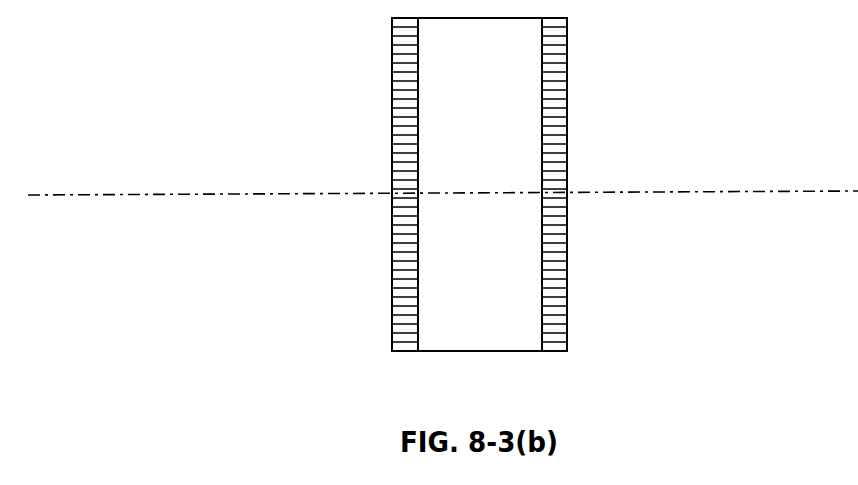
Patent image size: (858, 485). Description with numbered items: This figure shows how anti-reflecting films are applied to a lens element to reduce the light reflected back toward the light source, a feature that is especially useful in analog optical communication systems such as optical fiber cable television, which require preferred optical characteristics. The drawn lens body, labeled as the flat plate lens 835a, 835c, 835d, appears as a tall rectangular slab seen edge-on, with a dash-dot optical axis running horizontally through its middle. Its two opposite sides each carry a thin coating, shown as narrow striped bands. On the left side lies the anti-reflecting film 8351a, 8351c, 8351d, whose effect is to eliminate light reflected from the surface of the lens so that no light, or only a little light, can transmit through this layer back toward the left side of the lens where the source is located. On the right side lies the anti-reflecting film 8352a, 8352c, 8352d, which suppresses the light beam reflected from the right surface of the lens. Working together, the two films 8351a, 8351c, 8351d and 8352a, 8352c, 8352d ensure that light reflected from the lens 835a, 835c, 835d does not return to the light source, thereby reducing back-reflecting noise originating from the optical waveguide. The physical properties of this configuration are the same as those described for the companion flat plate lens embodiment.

The flat plate lens 835a is at (480, 184).
The flat plate lens 835c is at (480, 184).
The flat plate lens 835d is at (480, 184).
The anti-reflecting film 8351a is at (378, 134).
The anti-reflecting film 8351c is at (290, 184).
The anti-reflecting film 8351d is at (302, 184).
The anti-reflecting film 8352a is at (632, 184).
The anti-reflecting film 8352c is at (567, 111).
The anti-reflecting film 8352d is at (632, 184).